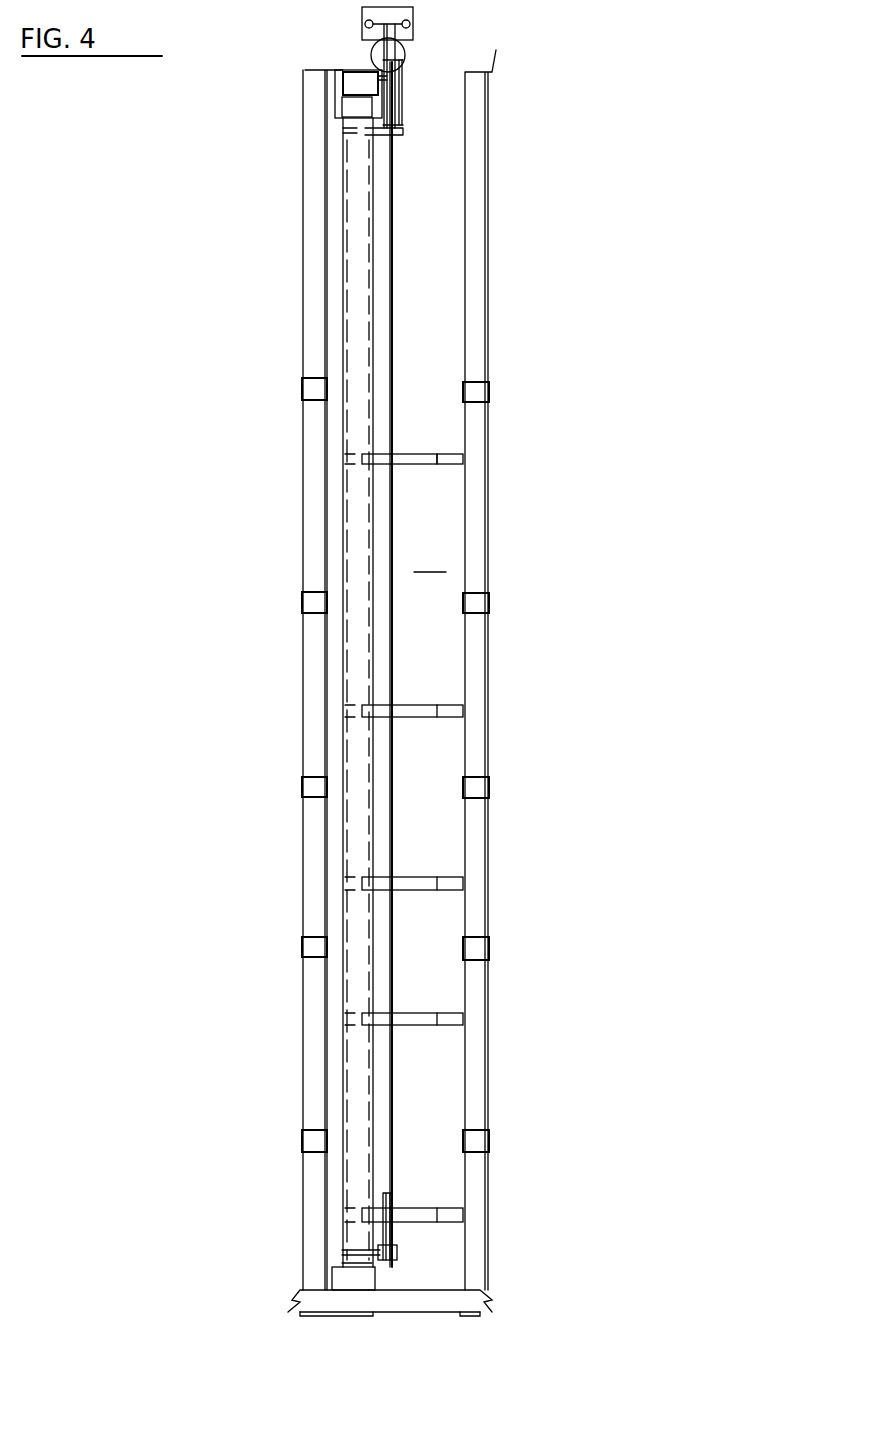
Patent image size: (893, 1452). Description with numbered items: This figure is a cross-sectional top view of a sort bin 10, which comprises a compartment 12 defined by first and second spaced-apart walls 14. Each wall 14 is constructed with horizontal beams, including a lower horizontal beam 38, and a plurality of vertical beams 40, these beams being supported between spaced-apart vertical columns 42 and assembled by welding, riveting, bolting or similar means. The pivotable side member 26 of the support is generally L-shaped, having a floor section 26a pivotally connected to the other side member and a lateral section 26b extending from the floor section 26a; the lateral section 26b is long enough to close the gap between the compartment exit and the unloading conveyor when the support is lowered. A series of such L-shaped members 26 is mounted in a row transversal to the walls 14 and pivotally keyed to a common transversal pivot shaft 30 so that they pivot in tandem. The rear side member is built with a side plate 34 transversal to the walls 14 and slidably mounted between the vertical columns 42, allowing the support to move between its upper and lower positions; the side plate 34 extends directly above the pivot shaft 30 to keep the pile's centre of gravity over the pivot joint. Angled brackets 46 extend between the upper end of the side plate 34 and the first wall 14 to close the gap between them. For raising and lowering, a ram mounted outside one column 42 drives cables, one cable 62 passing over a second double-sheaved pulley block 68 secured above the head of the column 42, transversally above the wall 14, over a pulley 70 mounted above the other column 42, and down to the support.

The sort bin 10 is at (256, 224).
The compartment 12 is at (430, 558).
The walls 14 is at (490, 874).
The pivotable side member 26 is at (484, 791).
The floor section 26a is at (415, 464).
The lateral section 26b is at (455, 458).
The pivot shaft 30 is at (368, 312).
The side plate 34 is at (352, 548).
The lower horizontal beam 38 is at (312, 705).
The vertical beams 40 is at (483, 388).
The vertical columns 42 is at (352, 78).
The angled brackets 46 is at (347, 462).
The cable 62 is at (393, 200).
The second double-sheaved pulley block 68 is at (398, 72).
The pulley 70 is at (393, 1230).